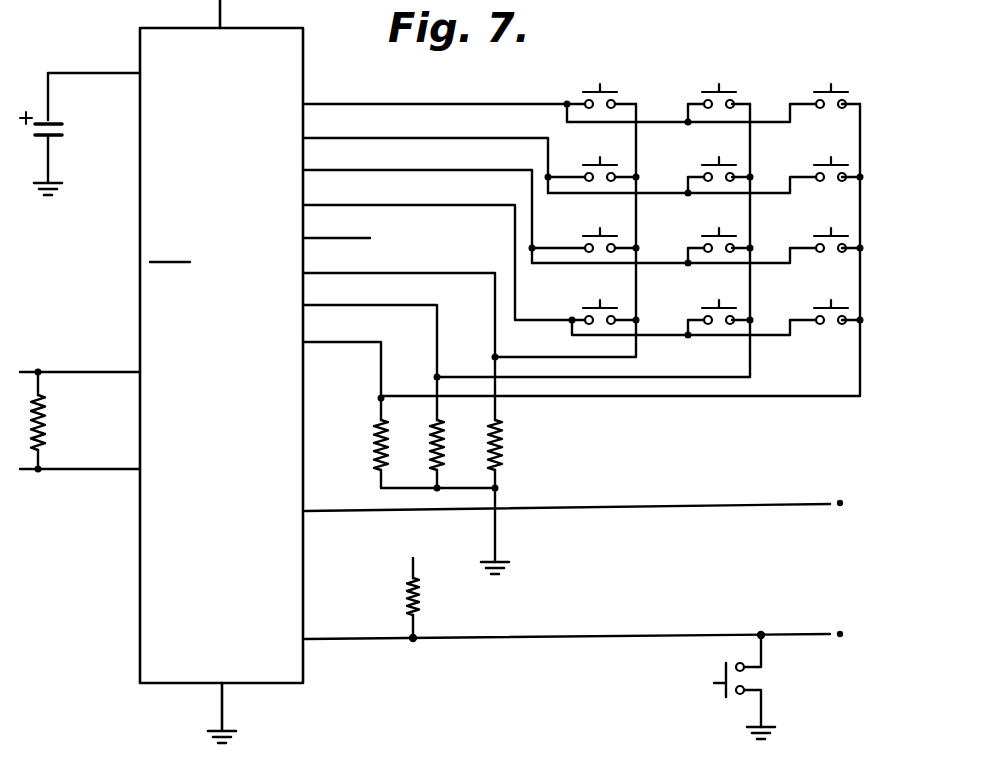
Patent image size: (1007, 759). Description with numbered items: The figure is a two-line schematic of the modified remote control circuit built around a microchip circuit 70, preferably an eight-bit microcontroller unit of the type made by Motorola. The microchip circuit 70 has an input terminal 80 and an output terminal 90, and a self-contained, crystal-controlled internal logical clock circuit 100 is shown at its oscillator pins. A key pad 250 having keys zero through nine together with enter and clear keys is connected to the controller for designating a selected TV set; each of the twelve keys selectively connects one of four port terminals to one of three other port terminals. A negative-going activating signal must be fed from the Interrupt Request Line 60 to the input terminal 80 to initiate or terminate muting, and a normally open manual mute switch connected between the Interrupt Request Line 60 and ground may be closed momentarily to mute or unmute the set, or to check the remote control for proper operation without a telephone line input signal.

The internal logical clock circuit 100 is at (431, 371).
The microchip circuit 70 is at (142, 617).
The key pad 250 is at (622, 210).
The input terminal 80 is at (306, 641).
The output terminal 90 is at (773, 503).
The Interrupt Request Line 60 is at (805, 634).